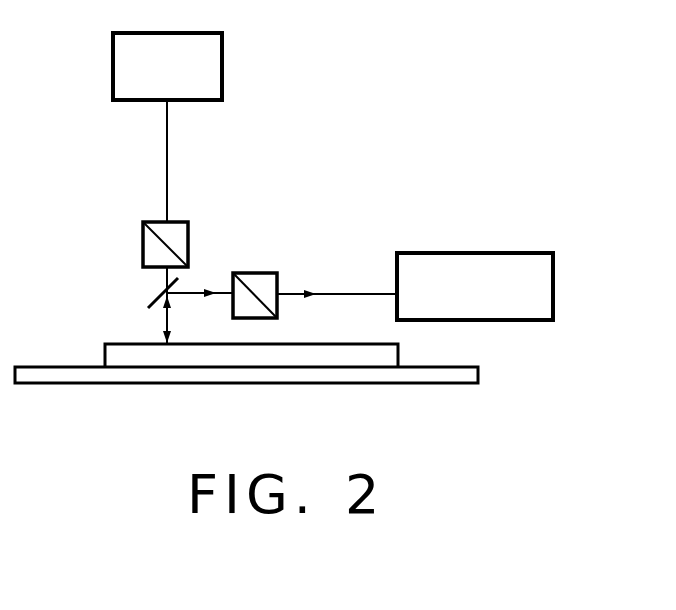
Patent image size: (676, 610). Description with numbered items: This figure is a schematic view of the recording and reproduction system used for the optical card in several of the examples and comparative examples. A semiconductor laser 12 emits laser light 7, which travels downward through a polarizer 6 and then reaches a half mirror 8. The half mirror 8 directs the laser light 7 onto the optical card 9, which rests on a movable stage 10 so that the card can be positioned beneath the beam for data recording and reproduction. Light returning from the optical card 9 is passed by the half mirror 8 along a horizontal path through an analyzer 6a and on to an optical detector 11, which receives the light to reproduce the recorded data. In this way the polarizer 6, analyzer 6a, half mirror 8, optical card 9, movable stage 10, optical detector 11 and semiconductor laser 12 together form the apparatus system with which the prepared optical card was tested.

The semiconductor laser 12 is at (222, 65).
The laser light 7 is at (167, 178).
The polarizer 6 is at (188, 240).
The analyzer 6a is at (270, 273).
The half mirror 8 is at (152, 303).
The optical detector 11 is at (468, 253).
The optical card 9 is at (388, 353).
The movable stage 10 is at (478, 378).